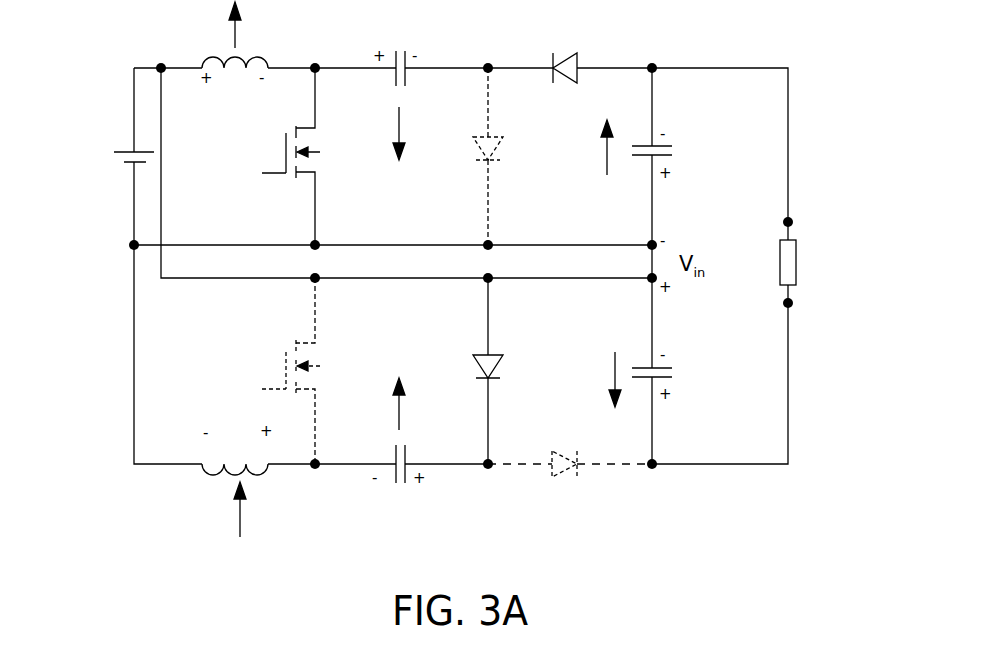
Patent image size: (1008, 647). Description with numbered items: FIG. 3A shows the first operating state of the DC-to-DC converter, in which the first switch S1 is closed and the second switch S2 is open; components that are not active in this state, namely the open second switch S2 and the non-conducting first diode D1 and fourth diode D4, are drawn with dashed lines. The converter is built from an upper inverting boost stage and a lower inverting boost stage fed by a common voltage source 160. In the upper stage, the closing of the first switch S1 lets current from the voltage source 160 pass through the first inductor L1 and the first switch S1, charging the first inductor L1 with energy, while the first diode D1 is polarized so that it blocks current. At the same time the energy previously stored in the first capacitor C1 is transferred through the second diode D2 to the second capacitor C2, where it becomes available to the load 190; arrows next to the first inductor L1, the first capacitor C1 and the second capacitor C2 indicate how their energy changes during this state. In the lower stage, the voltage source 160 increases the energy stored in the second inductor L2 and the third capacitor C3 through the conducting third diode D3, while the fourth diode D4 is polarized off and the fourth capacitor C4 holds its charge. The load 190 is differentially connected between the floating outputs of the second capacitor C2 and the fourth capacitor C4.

The voltage source 160 is at (74, 160).
The load 190 is at (809, 240).
The first inductor L1 is at (235, 84).
The second inductor L2 is at (235, 454).
The first switch S1 is at (283, 152).
The second switch S2 is at (282, 367).
The first capacitor C1 is at (402, 56).
The second capacitor C2 is at (665, 157).
The third capacitor C3 is at (400, 483).
The fourth capacitor C4 is at (665, 380).
The first diode D1 is at (470, 147).
The second diode D2 is at (561, 53).
The third diode D3 is at (473, 372).
The fourth diode D4 is at (564, 485).